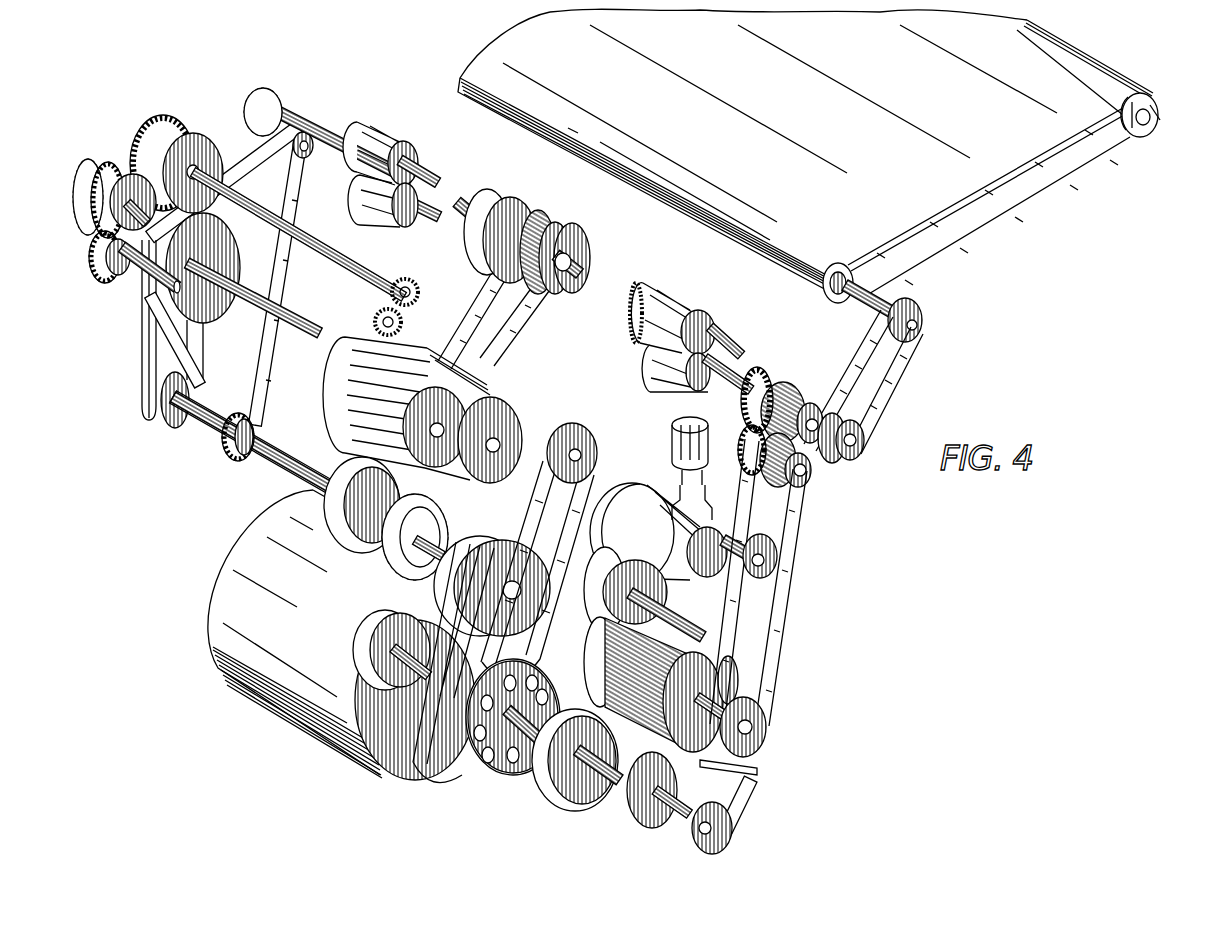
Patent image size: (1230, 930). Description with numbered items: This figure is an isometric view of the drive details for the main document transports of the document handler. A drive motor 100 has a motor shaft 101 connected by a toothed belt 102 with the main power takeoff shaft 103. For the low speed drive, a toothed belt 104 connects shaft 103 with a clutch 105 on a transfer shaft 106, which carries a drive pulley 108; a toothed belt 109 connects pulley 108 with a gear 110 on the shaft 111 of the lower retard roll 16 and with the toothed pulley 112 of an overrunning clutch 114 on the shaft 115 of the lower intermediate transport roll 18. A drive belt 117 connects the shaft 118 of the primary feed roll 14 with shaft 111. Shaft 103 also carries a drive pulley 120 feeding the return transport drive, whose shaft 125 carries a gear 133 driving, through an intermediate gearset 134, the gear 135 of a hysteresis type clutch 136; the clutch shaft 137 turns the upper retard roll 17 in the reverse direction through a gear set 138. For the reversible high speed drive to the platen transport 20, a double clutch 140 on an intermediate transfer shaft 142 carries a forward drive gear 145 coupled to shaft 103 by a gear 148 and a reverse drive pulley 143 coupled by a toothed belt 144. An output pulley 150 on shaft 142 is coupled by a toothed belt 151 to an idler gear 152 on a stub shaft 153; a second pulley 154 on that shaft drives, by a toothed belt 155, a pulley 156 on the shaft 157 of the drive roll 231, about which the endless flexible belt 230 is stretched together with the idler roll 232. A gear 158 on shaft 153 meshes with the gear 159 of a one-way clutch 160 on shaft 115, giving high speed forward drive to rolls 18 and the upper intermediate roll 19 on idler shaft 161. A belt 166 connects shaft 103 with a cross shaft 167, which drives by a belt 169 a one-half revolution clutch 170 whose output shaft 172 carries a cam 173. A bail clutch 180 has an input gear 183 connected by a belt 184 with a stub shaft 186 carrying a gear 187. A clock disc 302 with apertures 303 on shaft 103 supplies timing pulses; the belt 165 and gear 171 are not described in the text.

The primary feed roll 14 is at (345, 547).
The lower retard roll 16 is at (500, 388).
The upper retard roll 17 is at (362, 347).
The lower intermediate transport roll 18 is at (382, 197).
The upper intermediate transport roll 19 is at (390, 138).
The platen transport 20 is at (986, 225).
The drive motor 100 is at (215, 594).
The motor shaft 101 is at (415, 700).
The toothed belt 102 is at (390, 705).
The main power takeoff shaft 103 is at (730, 832).
The toothed belt 104 is at (470, 650).
The clutch 105 is at (480, 540).
The transfer shaft 106 is at (255, 466).
The drive pulley 108 is at (238, 415).
The toothed belt 109 is at (264, 384).
The gear 110 is at (166, 298).
The shaft 111 is at (280, 322).
The toothed pulley 112 is at (300, 152).
The overrunning clutch 114 is at (280, 104).
The shaft 115 is at (745, 375).
The drive belt 117 is at (142, 349).
The shaft 118 is at (282, 452).
The drive pulley 120 is at (715, 847).
The shaft 125 is at (160, 280).
The gear 133 is at (92, 257).
The intermediate gearset 134 is at (78, 183).
The gear 135 is at (160, 122).
The hysteresis type clutch 136 is at (195, 130).
The clutch shaft 137 is at (312, 258).
The gear set 138 is at (394, 329).
The double clutch 140 is at (745, 770).
The intermediate transfer shaft 142 is at (754, 730).
The reverse drive pulley 143 is at (752, 672).
The toothed belt 144 is at (612, 806).
The forward drive gear 145 is at (598, 642).
The gear 148 is at (540, 782).
The output pulley 150 is at (768, 713).
The toothed belt 151 is at (783, 606).
The idler gear 152 is at (790, 521).
The stub shaft 153 is at (802, 490).
The second pulley 154 is at (815, 470).
The toothed belt 155 is at (880, 386).
The pulley 156 is at (922, 310).
The shaft 157 is at (920, 328).
The gear 158 is at (1158, 123).
The gear 159 is at (790, 392).
The one-way clutch 160 is at (790, 394).
The idler shaft 161 is at (428, 168).
The belt 165 is at (450, 767).
The belt 166 is at (580, 483).
The cross shaft 167 is at (580, 450).
The belt 169 is at (514, 334).
The one-half revolution clutch 170 is at (538, 205).
The gear 171 is at (500, 200).
The clutch output shaft 172 is at (586, 246).
The cam 173 is at (572, 230).
The bail clutch 180 is at (688, 514).
The input gear 183 is at (628, 512).
The belt 184 is at (626, 532).
The stub shaft 186 is at (670, 636).
The gear 187 is at (660, 594).
The endless flexible belt 230 is at (1047, 191).
The drive roll 231 is at (836, 262).
The idler roll 232 is at (1160, 101).
The clock disc 302 is at (495, 772).
The apertures 303 is at (578, 668).